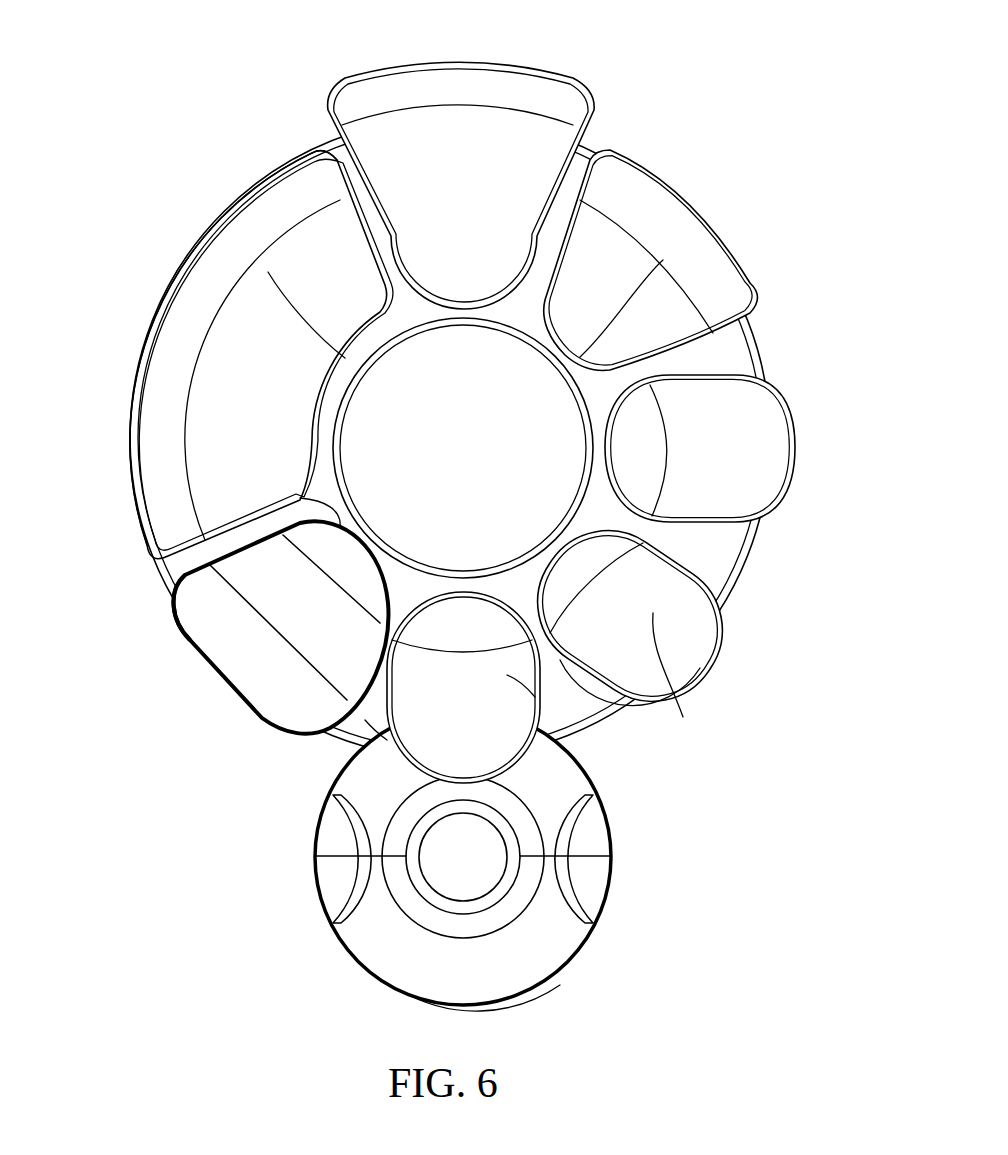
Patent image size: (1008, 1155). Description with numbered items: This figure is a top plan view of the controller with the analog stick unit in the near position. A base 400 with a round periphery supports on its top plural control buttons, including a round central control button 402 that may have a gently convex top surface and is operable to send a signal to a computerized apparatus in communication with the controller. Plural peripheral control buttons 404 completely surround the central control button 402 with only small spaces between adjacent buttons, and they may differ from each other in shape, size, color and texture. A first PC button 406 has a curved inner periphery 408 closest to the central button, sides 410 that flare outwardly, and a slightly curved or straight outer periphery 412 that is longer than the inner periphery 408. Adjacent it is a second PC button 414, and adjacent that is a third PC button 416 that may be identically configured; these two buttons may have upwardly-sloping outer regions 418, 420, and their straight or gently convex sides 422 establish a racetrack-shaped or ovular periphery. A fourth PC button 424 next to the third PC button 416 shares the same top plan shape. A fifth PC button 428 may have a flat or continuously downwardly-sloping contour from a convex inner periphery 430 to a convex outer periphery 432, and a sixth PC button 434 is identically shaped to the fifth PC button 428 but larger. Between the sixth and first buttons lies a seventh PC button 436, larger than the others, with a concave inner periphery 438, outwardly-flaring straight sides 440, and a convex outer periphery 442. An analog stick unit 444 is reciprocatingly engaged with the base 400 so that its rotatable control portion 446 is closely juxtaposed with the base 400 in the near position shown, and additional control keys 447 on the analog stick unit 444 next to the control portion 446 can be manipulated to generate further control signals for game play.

The base 400 is at (758, 360).
The central control button 402 is at (463, 448).
The peripheral control buttons 404 is at (660, 94).
The first PC button 406 is at (243, 570).
The curved inner periphery 408 is at (300, 498).
The sides 410 is at (428, 718).
The outer periphery 412 is at (215, 675).
The second PC button 414 is at (535, 697).
The third PC button 416 is at (683, 717).
The upwardly-sloping outer region 418 is at (387, 740).
The upwardly-sloping outer region 420 is at (685, 655).
The sides 422 is at (700, 578).
The fourth PC button 424 is at (770, 450).
The fifth PC button 428 is at (703, 312).
The convex inner periphery 430 is at (663, 260).
The convex outer periphery 432 is at (678, 200).
The sixth PC button 434 is at (475, 125).
The seventh PC button 436 is at (243, 323).
The concave inner periphery 438 is at (268, 272).
The outwardly-flaring straight sides 440 is at (340, 200).
The convex outer periphery 442 is at (160, 297).
The analog stick unit 444 is at (650, 903).
The control portion 446 is at (548, 942).
The control keys 447 is at (605, 860).